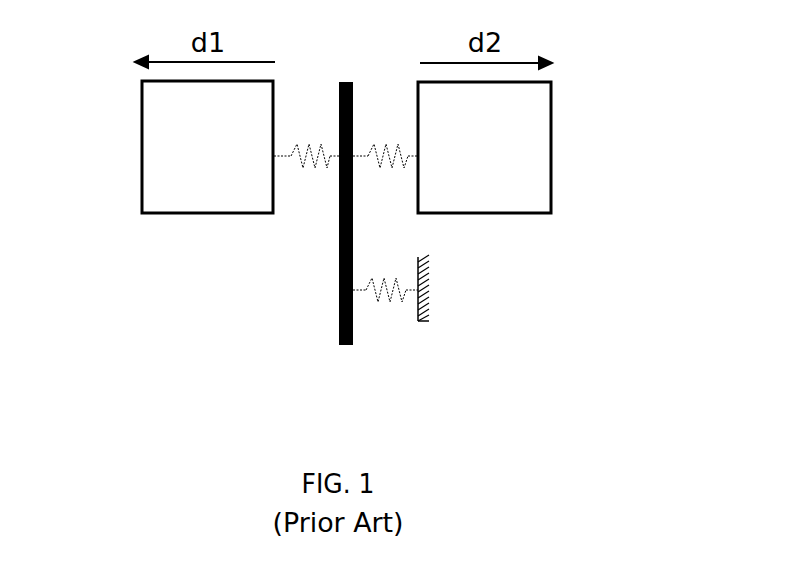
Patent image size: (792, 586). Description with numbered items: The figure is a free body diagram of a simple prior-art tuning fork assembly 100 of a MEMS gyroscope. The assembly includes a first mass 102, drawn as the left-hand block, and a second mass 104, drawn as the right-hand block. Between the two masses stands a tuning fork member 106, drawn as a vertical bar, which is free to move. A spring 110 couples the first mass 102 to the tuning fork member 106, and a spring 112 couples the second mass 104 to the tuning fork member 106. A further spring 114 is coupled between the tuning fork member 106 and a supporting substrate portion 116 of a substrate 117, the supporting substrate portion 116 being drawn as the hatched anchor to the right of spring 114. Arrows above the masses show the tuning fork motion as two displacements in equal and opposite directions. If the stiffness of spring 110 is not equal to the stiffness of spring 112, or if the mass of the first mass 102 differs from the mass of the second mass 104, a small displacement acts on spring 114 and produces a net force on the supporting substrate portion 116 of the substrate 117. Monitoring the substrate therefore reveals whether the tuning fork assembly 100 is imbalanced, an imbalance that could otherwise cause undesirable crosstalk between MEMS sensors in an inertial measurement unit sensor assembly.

The tuning fork assembly 100 is at (658, 80).
The first mass 102 is at (207, 198).
The second mass 104 is at (491, 188).
The tuning fork member 106 is at (340, 313).
The spring 110 is at (310, 162).
The spring 112 is at (380, 162).
The spring 114 is at (382, 302).
The supporting substrate portion 116 is at (423, 310).
The substrate 117 is at (425, 282).